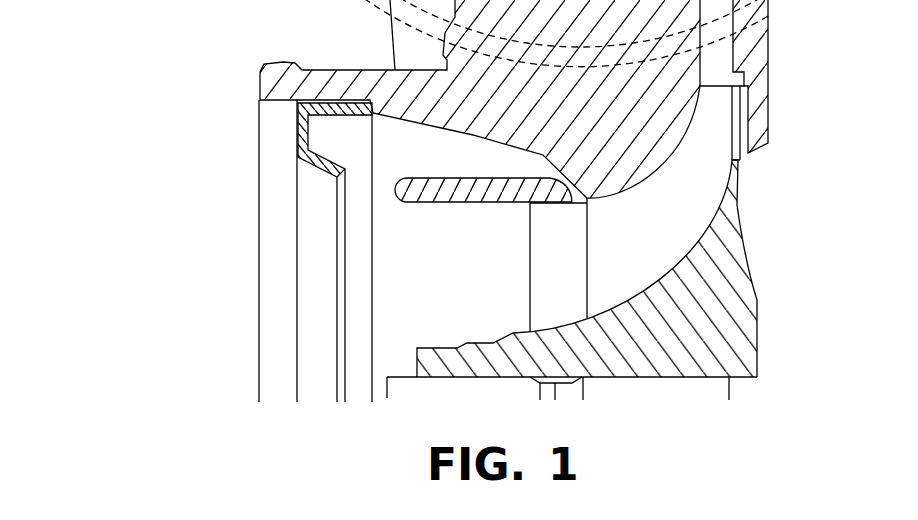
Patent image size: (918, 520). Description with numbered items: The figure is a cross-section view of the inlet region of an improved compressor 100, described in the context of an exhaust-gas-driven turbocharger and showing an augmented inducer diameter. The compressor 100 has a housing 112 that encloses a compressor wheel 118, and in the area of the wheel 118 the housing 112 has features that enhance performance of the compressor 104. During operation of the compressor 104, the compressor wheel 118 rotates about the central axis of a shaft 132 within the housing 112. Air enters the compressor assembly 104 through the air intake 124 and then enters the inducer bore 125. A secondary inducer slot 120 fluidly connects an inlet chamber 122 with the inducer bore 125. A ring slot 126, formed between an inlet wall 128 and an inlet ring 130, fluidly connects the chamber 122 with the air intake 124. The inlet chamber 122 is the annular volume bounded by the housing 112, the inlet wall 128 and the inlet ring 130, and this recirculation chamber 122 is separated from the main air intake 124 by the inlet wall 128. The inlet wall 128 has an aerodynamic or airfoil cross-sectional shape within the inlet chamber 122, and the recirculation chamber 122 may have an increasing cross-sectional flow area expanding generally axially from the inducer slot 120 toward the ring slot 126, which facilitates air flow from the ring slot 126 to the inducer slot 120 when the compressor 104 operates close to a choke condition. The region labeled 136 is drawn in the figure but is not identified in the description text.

The compressor 100 is at (141, 96).
The compressor 104 is at (240, 64).
The housing 112 is at (330, 67).
The compressor wheel 118 is at (694, 338).
The secondary inducer slot 120 is at (588, 212).
The inlet chamber 122 is at (377, 143).
The air intake 124 is at (229, 295).
The inducer bore 125 is at (438, 203).
The ring slot 126 is at (385, 190).
The inlet wall 128 is at (495, 199).
The inlet ring 130 is at (305, 168).
The shaft 132 is at (500, 408).
The channel 136 is at (488, 165).